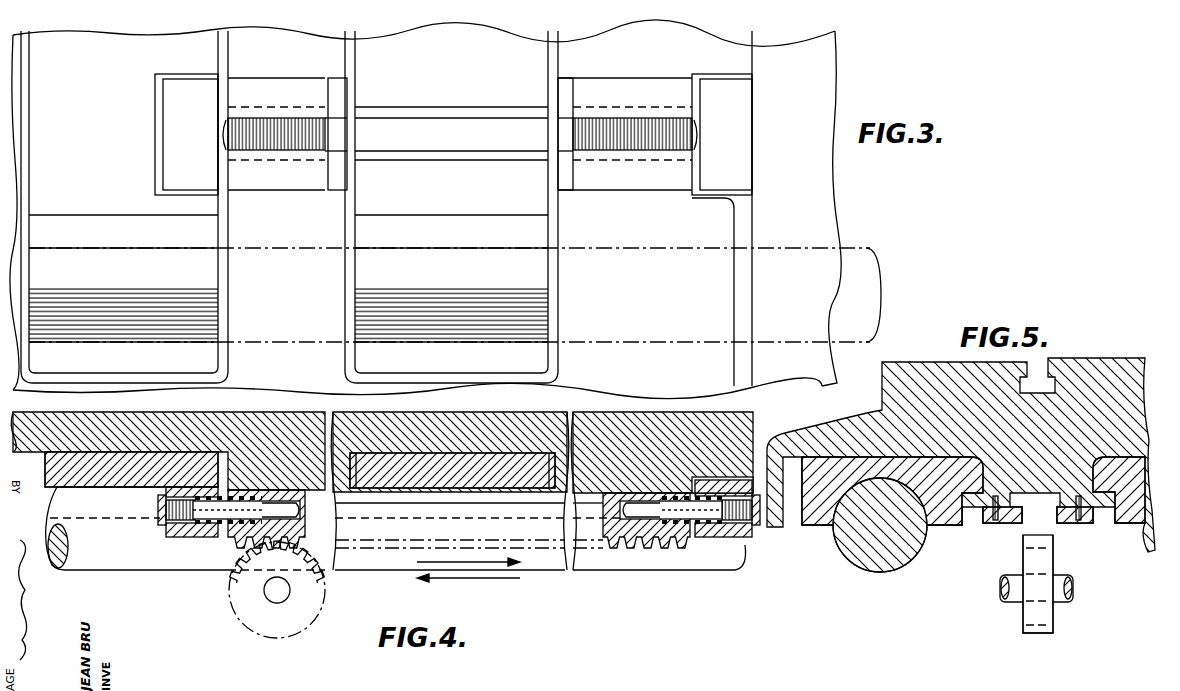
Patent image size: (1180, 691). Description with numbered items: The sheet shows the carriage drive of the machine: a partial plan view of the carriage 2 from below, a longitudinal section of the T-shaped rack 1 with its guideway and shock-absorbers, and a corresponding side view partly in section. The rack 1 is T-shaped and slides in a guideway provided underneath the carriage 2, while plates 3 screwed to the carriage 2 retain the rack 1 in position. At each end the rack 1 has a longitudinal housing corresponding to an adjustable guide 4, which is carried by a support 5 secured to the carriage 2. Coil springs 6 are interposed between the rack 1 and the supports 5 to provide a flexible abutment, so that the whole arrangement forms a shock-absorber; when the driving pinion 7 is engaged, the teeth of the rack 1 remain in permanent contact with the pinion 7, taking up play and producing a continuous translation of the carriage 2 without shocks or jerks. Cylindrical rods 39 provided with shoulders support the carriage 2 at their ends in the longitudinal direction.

In FIG. 3, the rack 1 is at (268, 150).
In FIG. 4, the rack 1 is at (272, 498).
In FIG. 5, the rack 1 is at (1030, 527).
In FIG. 3, the carriage 2 is at (718, 50).
In FIG. 4, the carriage 2 is at (700, 428).
In FIG. 5, the carriage 2 is at (1135, 444).
In FIG. 5, the plates 3 is at (988, 522).
In FIG. 4, the adjustable guide 4 is at (208, 536).
In FIG. 3, the support 5 is at (174, 103).
In FIG. 4, the support 5 is at (173, 531).
In FIG. 4, the coil springs 6 is at (226, 537).
In FIG. 4, the driving pinion 7 is at (297, 588).
In FIG. 5, the driving pinion 7 is at (1046, 612).
In FIG. 3, the cylindrical rods 39 is at (792, 278).
In FIG. 4, the cylindrical rods 39 is at (607, 556).
In FIG. 5, the cylindrical rods 39 is at (862, 545).